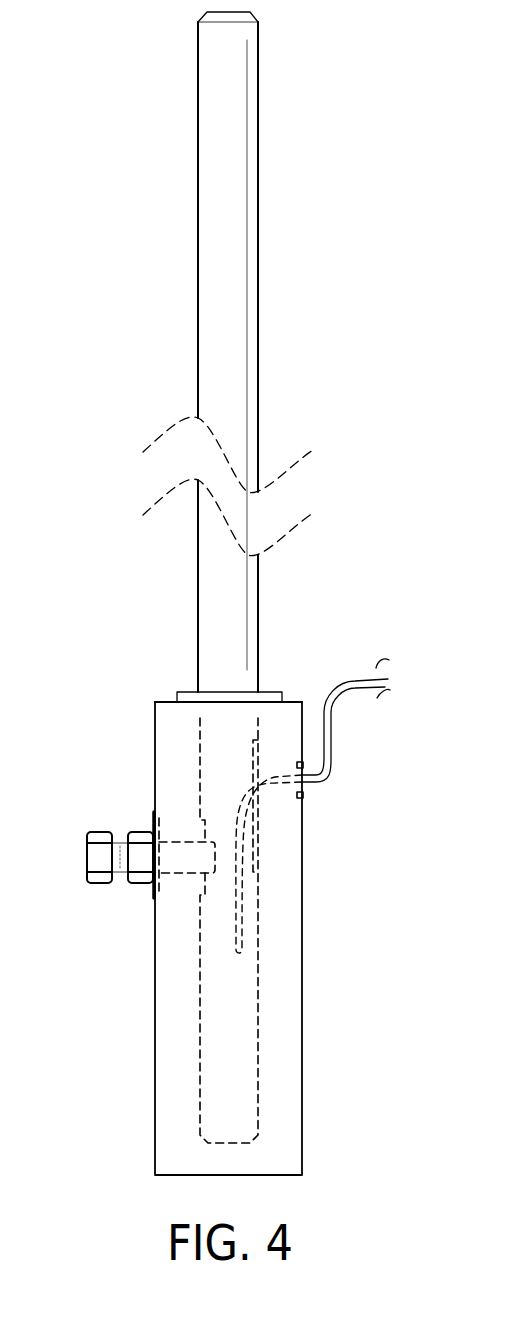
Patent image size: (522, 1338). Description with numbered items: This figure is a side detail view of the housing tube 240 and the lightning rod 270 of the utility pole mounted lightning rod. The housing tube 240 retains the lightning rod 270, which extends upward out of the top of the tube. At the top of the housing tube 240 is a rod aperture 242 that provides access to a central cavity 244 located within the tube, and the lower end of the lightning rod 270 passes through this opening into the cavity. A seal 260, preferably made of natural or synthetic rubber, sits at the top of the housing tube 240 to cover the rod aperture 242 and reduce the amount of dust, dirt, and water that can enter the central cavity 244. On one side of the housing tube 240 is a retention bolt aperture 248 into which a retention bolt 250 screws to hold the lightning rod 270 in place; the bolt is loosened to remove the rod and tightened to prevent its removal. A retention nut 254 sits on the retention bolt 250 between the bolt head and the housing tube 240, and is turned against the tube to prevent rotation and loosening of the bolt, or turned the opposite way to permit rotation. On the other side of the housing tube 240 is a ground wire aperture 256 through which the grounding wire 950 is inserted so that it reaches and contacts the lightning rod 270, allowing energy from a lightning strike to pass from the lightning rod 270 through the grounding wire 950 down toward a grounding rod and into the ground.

The lightning rod 270 is at (238, 173).
The seal 260 is at (268, 690).
The housing tube 240 is at (155, 1074).
The rod aperture 242 is at (230, 702).
The central cavity 244 is at (234, 980).
The retention bolt aperture 248 is at (186, 875).
The retention bolt 250 is at (87, 857).
The retention nut 254 is at (133, 877).
The ground wire aperture 256 is at (305, 793).
The grounding wire 950 is at (333, 722).